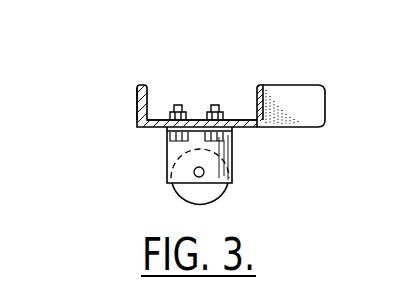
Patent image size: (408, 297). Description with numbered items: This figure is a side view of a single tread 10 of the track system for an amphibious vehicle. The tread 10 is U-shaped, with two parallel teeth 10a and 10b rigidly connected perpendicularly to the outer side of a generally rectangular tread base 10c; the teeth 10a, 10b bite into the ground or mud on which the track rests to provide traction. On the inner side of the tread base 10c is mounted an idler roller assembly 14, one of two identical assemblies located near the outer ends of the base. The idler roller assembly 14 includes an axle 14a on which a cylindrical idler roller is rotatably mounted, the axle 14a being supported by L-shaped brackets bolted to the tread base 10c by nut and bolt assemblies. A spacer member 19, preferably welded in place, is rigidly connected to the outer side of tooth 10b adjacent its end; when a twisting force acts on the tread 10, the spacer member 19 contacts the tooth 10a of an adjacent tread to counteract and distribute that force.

The tread 10 is at (169, 87).
The tooth 10a is at (137, 97).
The tooth 10b is at (261, 81).
The tread base 10c is at (237, 119).
The idler roller assembly 14 is at (240, 166).
The axle 14a is at (194, 172).
The spacer member 19 is at (316, 104).